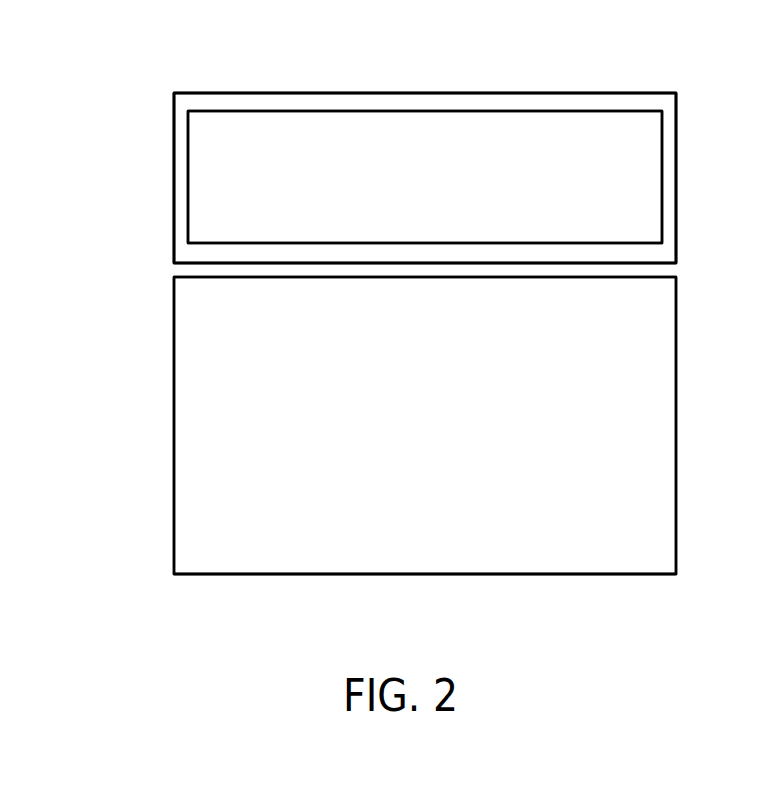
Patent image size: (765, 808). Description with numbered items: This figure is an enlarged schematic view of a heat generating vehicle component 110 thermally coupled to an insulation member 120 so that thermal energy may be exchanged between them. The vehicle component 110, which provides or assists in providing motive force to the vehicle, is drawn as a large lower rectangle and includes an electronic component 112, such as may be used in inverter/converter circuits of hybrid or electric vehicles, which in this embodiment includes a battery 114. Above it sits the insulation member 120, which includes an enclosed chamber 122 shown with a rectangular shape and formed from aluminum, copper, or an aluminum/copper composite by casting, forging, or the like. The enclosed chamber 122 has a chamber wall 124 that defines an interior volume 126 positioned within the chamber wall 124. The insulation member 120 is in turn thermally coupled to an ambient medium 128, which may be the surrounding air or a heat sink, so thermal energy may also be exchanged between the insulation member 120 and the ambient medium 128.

The vehicle component 110 is at (153, 496).
The electronic component 112 is at (156, 547).
The battery 114 is at (403, 575).
The insulation member 120 is at (156, 122).
The enclosed chamber 122 is at (155, 228).
The chamber wall 124 is at (245, 103).
The interior volume 126 is at (448, 190).
The ambient medium 128 is at (447, 53).